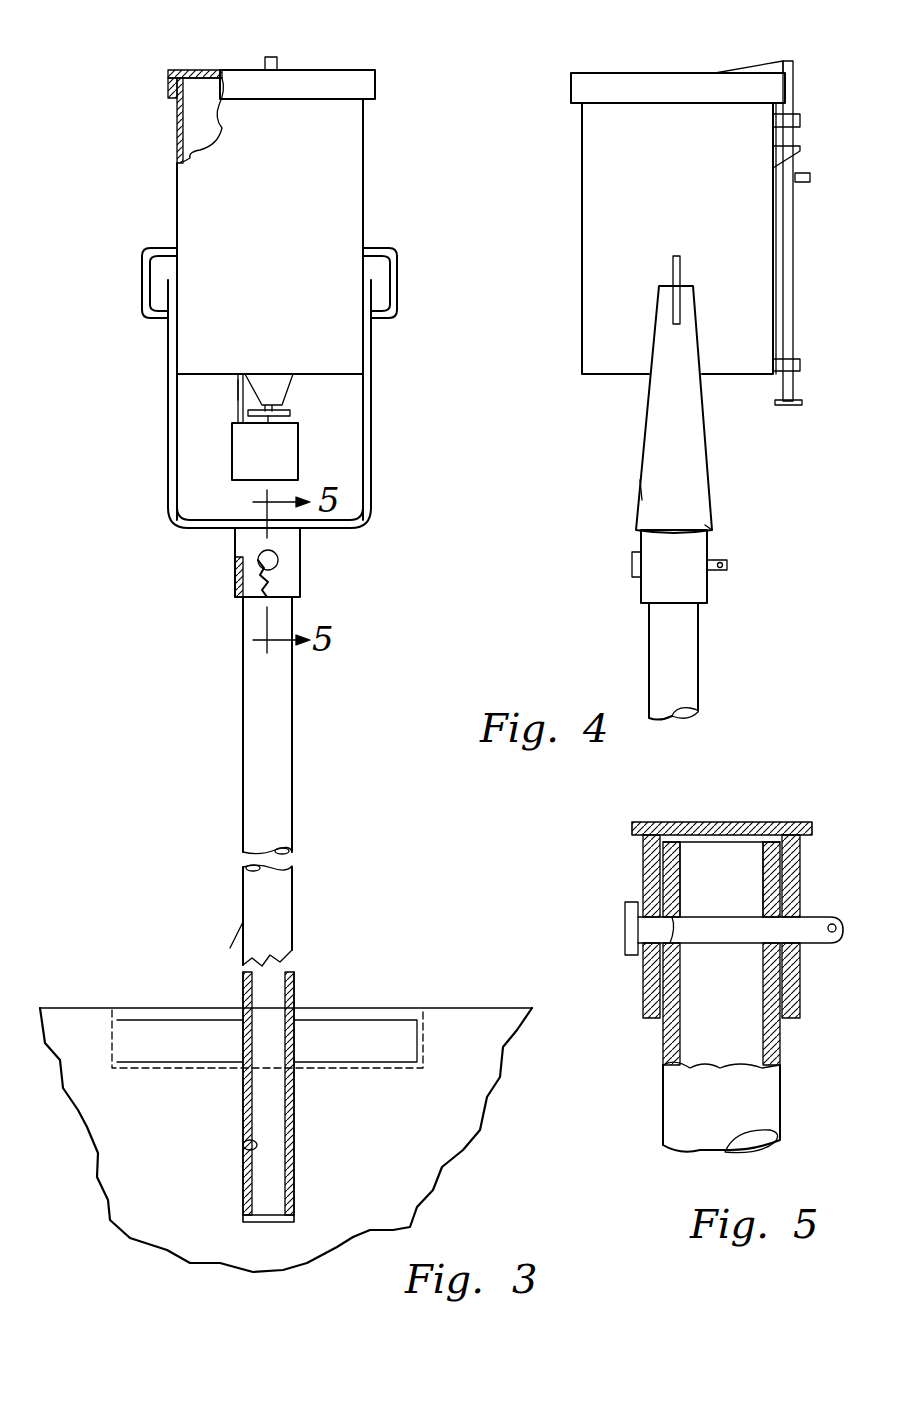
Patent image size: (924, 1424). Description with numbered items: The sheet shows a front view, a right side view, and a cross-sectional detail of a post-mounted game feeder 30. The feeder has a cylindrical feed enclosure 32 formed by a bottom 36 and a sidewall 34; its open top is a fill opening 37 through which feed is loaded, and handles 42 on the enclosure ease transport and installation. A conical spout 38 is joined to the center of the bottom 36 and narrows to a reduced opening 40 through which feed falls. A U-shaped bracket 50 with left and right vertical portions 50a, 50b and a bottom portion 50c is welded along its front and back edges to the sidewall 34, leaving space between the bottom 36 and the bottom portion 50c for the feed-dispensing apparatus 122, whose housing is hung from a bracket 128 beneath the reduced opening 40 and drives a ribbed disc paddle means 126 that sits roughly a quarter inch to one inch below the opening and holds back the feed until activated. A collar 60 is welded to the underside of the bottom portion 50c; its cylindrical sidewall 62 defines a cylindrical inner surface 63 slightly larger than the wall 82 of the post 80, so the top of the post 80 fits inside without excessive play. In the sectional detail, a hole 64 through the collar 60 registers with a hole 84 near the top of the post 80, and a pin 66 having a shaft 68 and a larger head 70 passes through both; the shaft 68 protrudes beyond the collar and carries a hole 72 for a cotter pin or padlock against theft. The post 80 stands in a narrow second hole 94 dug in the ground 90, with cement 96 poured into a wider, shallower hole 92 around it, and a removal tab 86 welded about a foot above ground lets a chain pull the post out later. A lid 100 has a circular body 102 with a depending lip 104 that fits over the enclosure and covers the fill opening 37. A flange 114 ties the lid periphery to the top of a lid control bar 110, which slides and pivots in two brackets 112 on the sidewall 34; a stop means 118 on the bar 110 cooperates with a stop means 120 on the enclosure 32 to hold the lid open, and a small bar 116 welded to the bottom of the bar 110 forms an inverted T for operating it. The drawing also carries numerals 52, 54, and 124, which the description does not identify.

In FIG. 3, the feeder 30 is at (130, 582).
In FIG. 4, the feeder 30 is at (620, 420).
In FIG. 3, the feed enclosure 32 is at (366, 190).
In FIG. 4, the feed enclosure 32 is at (582, 215).
In FIG. 3, the sidewall 34 is at (178, 140).
In FIG. 3, the bottom 36 is at (330, 380).
In FIG. 4, the bottom 36 is at (612, 374).
In FIG. 3, the fill opening 37 is at (192, 70).
In FIG. 3, the conical spout 38 is at (285, 390).
In FIG. 3, the reduced opening 40 is at (264, 349).
In FIG. 3, the handles 42 is at (142, 275).
In FIG. 4, the handles 42 is at (682, 272).
In FIG. 3, the U-shaped bracket 50 is at (372, 462).
In FIG. 4, the U-shaped bracket 50 is at (710, 455).
In FIG. 3, the left vertical portion 50a is at (168, 434).
In FIG. 3, the right vertical portion 50b is at (371, 490).
In FIG. 3, the bottom portion 50c is at (228, 528).
In FIG. 5, the bottom portion 50c is at (724, 822).
In FIG. 4, the bracket tapered front 52 is at (637, 495).
In FIG. 4, the bracket lower lip 54 is at (713, 505).
In FIG. 3, the collar 60 is at (302, 558).
In FIG. 4, the collar 60 is at (710, 545).
In FIG. 5, the collar 60 is at (806, 857).
In FIG. 3, the cylindrical sidewall 62 is at (236, 572).
In FIG. 5, the cylindrical sidewall 62 is at (803, 877).
In FIG. 5, the cylindrical inner surface 63 is at (673, 985).
In FIG. 5, the hole 64 is at (630, 936).
In FIG. 5, the pin 66 is at (822, 947).
In FIG. 5, the shaft 68 is at (705, 916).
In FIG. 5, the head 70 is at (626, 912).
In FIG. 5, the hole 72 is at (830, 945).
In FIG. 3, the post 80 is at (294, 755).
In FIG. 4, the post 80 is at (700, 660).
In FIG. 5, the post 80 is at (784, 1083).
In FIG. 5, the wall 82 is at (784, 1035).
In FIG. 5, the hole 84 is at (690, 930).
In FIG. 3, the removal tab 86 is at (232, 946).
In FIG. 3, the ground 90 is at (478, 1006).
In FIG. 3, the hole 92 is at (112, 1034).
In FIG. 3, the second hole 94 is at (244, 1145).
In FIG. 3, the cement 96 is at (355, 1020).
In FIG. 3, the lid 100 is at (352, 70).
In FIG. 4, the lid 100 is at (628, 72).
In FIG. 3, the circular body 102 is at (210, 70).
In FIG. 3, the lip 104 is at (168, 88).
In FIG. 4, the lid control bar 110 is at (795, 250).
In FIG. 4, the brackets 112 is at (803, 120).
In FIG. 3, the flange 114 is at (278, 64).
In FIG. 4, the flange 114 is at (760, 68).
In FIG. 4, the small bar 116 is at (790, 406).
In FIG. 4, the stop means 118 is at (811, 178).
In FIG. 4, the stop means 120 is at (803, 150).
In FIG. 3, the feed-dispensing apparatus 122 is at (230, 445).
In FIG. 3, the control box side 124 is at (298, 450).
In FIG. 3, the paddle means 126 is at (291, 413).
In FIG. 3, the bracket 128 is at (236, 387).